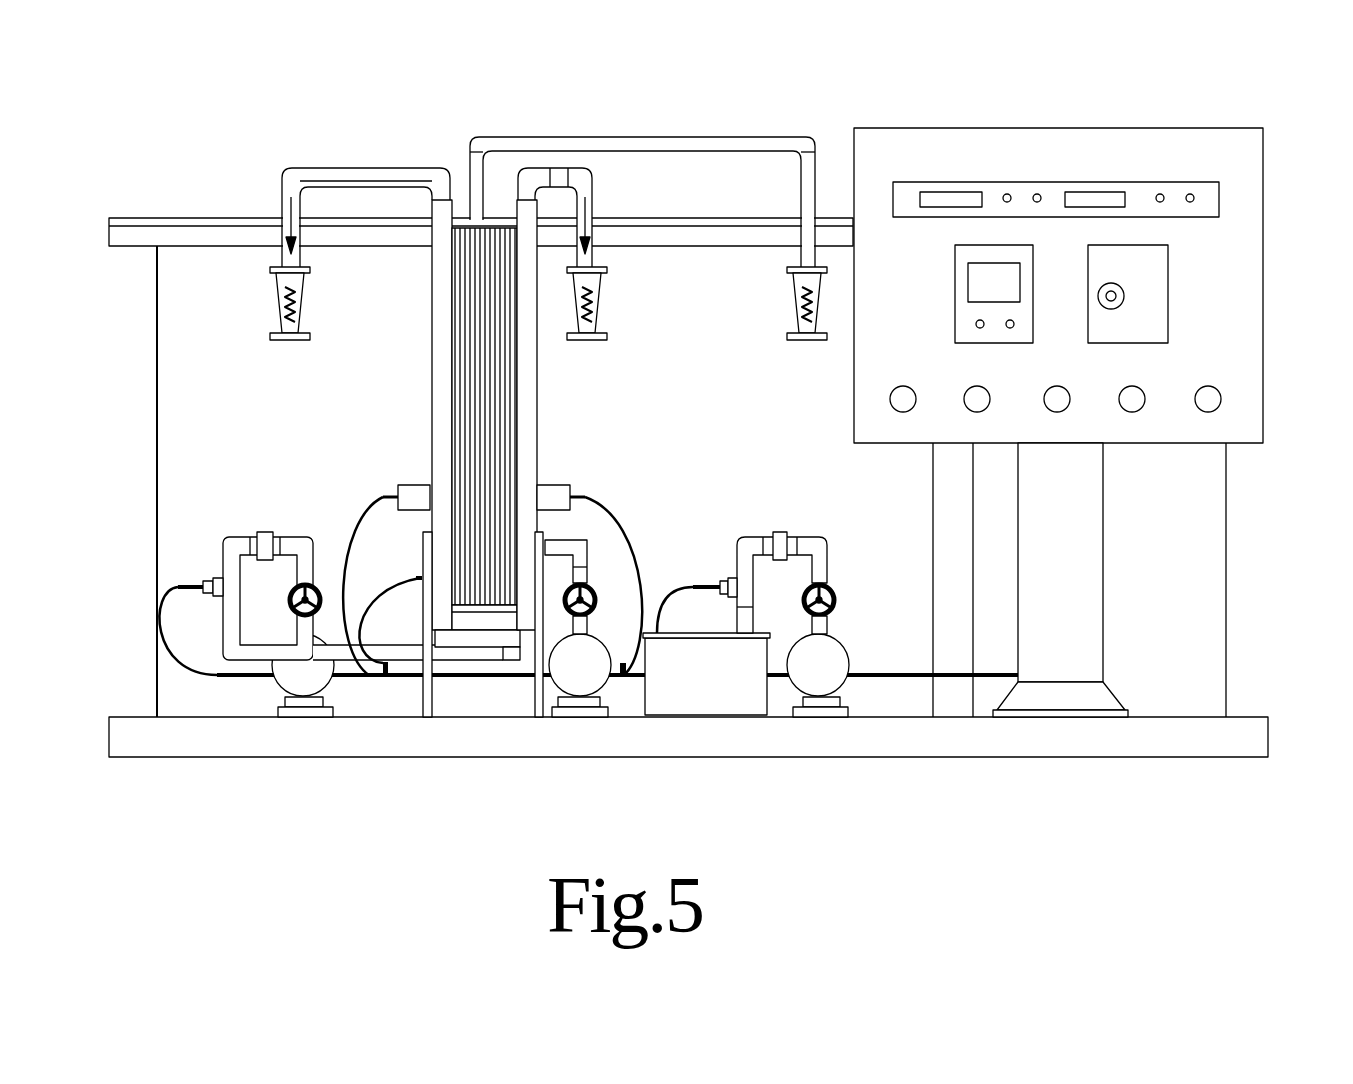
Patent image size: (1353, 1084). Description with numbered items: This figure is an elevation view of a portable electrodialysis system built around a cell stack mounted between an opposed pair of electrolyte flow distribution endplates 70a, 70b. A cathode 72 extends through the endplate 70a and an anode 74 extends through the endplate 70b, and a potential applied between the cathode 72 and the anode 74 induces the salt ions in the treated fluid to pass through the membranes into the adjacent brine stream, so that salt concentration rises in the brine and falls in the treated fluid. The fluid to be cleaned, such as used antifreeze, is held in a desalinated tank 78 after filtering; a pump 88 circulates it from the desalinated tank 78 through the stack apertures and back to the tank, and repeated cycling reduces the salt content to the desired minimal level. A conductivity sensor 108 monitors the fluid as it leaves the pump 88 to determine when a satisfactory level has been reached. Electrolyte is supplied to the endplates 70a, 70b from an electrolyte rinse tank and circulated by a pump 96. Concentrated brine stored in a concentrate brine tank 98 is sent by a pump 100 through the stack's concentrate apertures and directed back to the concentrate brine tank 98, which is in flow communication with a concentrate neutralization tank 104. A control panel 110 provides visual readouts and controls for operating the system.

The electrolyte flow distribution endplate 70a is at (440, 366).
The electrolyte flow distribution endplate 70b is at (527, 380).
The cathode 72 is at (418, 492).
The anode 74 is at (553, 492).
The desalinated tank 78 is at (157, 372).
The pump 88 is at (290, 676).
The pump 96 is at (822, 657).
The concentrate brine tank 98 is at (677, 268).
The pump 100 is at (592, 658).
The concentrate neutralization tank 104 is at (1202, 590).
The conductivity sensor 108 is at (220, 585).
The control panel 110 is at (935, 138).